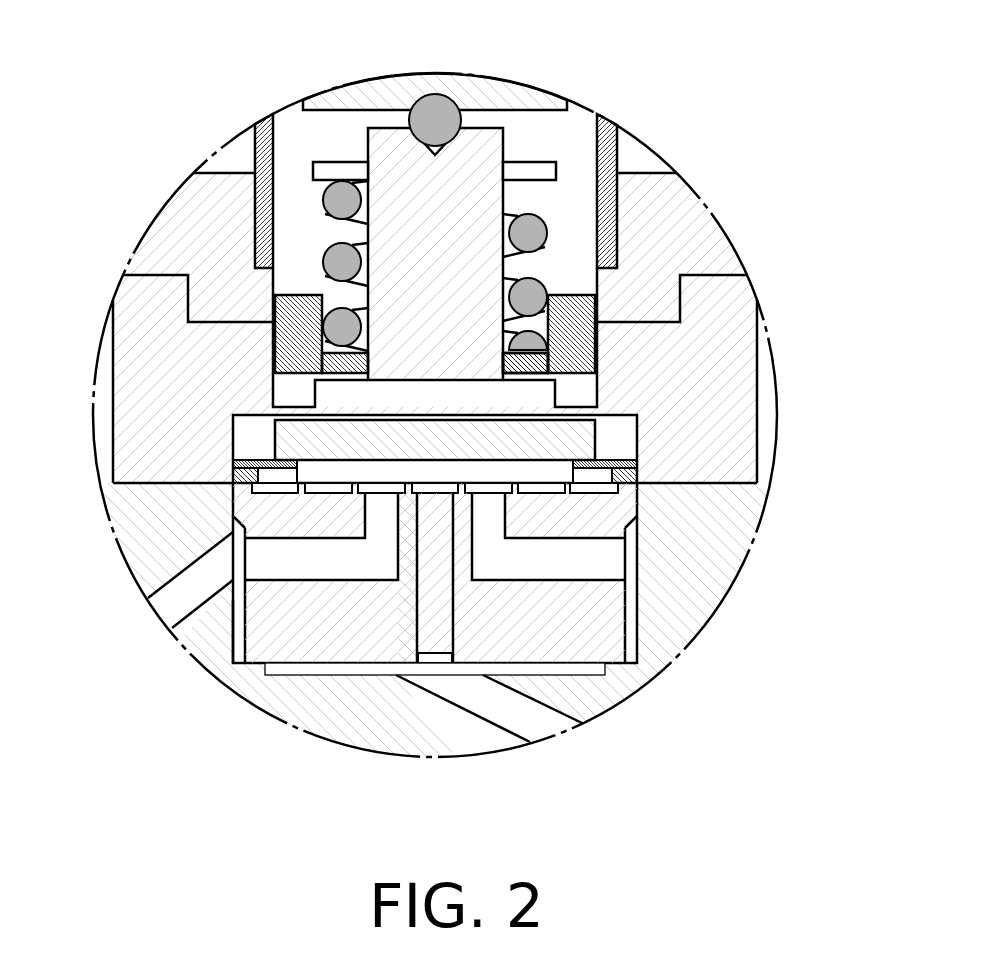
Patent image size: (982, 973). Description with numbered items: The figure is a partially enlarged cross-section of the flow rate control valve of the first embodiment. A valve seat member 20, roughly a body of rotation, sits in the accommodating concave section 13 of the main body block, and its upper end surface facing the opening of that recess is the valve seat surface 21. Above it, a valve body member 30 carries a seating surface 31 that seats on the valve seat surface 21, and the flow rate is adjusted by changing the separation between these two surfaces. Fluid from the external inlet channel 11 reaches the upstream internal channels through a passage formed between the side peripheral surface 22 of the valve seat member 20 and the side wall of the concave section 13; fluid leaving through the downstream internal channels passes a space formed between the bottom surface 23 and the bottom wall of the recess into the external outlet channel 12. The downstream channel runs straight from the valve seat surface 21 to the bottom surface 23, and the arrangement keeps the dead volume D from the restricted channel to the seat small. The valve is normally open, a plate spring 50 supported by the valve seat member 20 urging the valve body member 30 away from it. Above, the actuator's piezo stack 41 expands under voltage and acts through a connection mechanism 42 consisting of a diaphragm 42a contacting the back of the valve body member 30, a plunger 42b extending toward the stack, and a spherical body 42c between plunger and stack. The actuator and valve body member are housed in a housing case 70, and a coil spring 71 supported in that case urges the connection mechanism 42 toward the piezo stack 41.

The external inlet channel 11 is at (168, 592).
The external outlet channel 12 is at (516, 710).
The accommodating concave section 13 is at (232, 636).
The valve seat member 20 is at (624, 644).
The valve seat surface 21 is at (468, 475).
The side peripheral surface 22 is at (624, 622).
The bottom surface 23 is at (572, 667).
The valve body member 30 is at (597, 435).
The seating surface 31 is at (573, 483).
The piezo stack 41 is at (513, 95).
The connection mechanism 42 is at (341, 225).
The diaphragm 42a is at (296, 405).
The plunger 42b is at (368, 142).
The spherical body 42c is at (410, 117).
The plate spring 50 is at (247, 461).
The housing case 70 is at (617, 152).
The coil spring 71 is at (547, 223).
The dead volume D is at (427, 483).